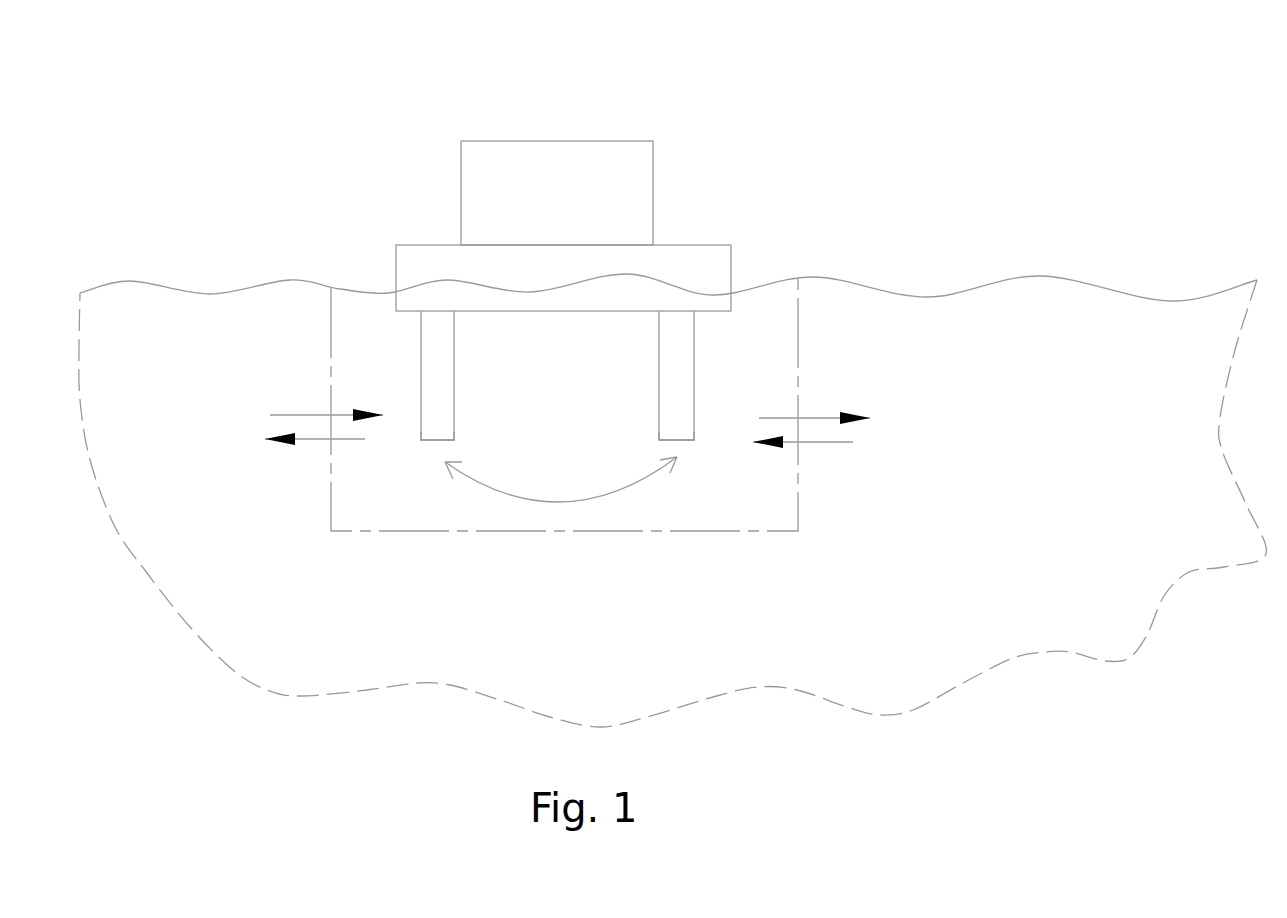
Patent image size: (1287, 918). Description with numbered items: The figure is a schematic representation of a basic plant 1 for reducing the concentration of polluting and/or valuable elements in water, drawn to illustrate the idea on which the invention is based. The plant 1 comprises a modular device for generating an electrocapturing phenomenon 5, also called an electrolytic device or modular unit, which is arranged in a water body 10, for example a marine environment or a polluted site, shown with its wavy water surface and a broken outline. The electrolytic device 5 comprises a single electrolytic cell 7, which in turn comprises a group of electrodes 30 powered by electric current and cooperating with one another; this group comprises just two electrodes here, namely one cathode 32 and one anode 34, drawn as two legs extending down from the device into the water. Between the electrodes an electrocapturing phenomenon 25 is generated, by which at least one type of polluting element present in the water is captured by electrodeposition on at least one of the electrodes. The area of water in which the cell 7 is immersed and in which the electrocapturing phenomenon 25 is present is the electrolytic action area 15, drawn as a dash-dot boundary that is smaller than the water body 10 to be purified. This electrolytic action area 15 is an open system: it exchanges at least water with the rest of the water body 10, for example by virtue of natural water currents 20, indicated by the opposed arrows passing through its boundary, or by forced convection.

The plant 1 is at (524, 278).
The modular device for generating an electrocapturing phenomenon 5 is at (763, 213).
The electrolytic cell 7 is at (722, 403).
The water body 10 is at (1115, 330).
The electrolytic action area 15 is at (798, 380).
The natural water currents 20 is at (285, 458).
The electrocapturing phenomenon 25 is at (617, 495).
The group of electrodes 30 is at (354, 409).
The cathode 32 is at (435, 417).
The anode 34 is at (671, 425).